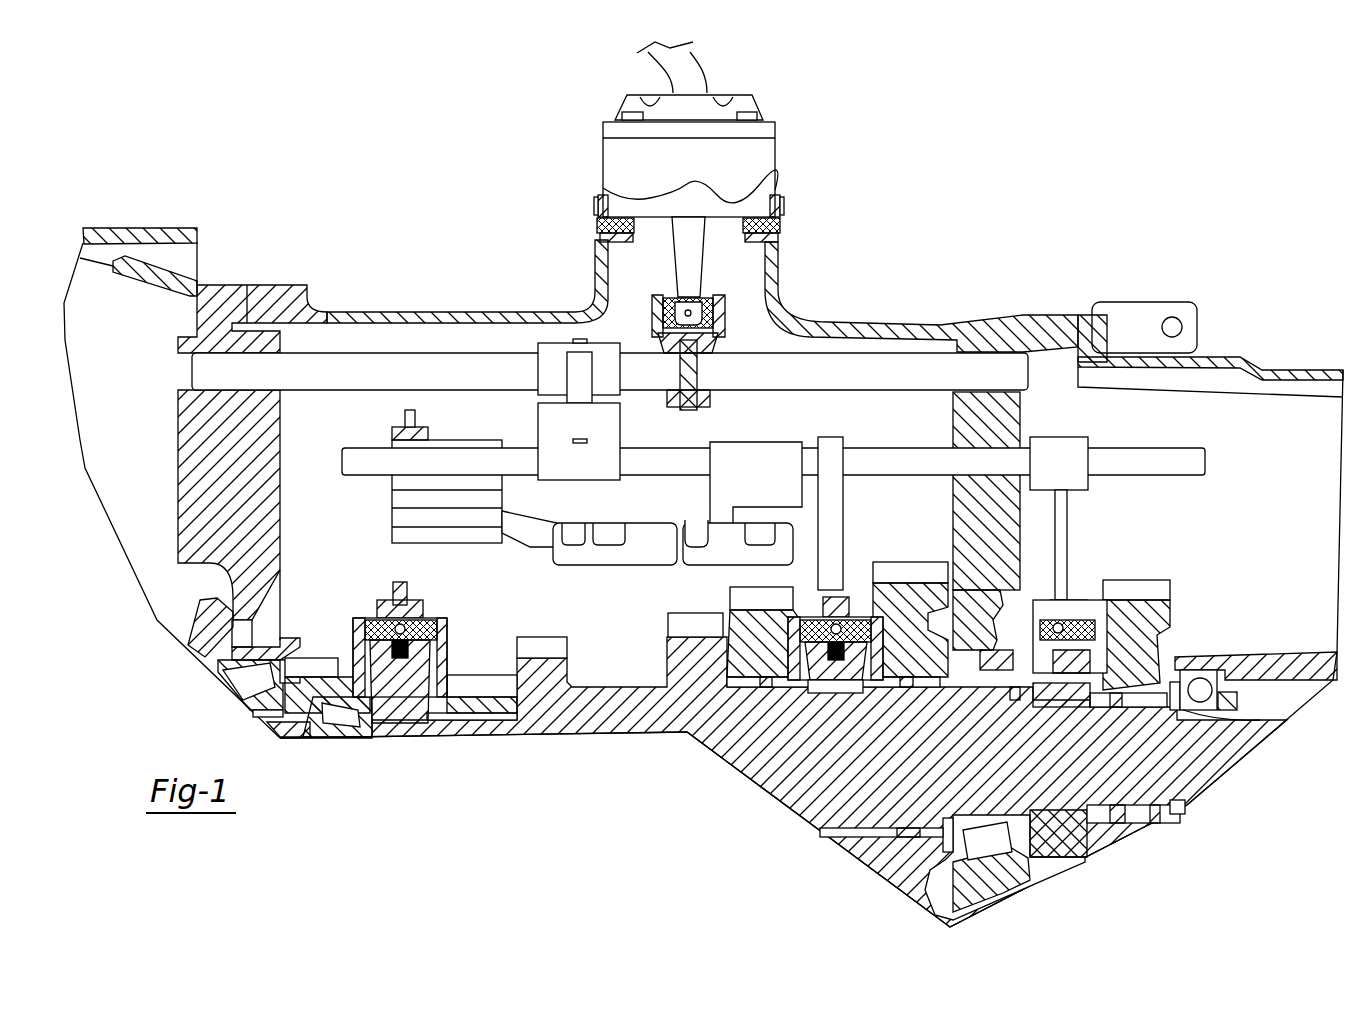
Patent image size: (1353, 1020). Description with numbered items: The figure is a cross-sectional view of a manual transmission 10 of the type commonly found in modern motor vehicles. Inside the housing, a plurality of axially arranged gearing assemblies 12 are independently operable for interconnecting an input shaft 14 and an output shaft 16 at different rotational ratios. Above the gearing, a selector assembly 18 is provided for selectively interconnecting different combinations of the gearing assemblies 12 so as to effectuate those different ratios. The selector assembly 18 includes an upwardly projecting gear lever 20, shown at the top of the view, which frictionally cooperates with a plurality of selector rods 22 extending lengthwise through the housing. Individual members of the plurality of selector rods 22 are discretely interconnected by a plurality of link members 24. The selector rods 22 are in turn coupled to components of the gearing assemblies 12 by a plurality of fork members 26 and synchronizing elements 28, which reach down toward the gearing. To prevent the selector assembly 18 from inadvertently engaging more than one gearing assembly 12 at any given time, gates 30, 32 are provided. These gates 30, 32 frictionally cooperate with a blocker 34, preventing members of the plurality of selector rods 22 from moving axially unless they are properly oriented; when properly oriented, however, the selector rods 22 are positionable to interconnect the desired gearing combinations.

The manual transmission 10 is at (906, 276).
The gearing assemblies 12 is at (478, 680).
The input shaft 14 is at (330, 662).
The output shaft 16 is at (563, 658).
The selector assembly 18 is at (372, 400).
The gear lever 20 is at (687, 230).
The selector rods 22 is at (876, 374).
The link members 24 is at (552, 425).
The fork members 26 is at (840, 530).
The synchronizing elements 28 is at (425, 615).
The gate 30 is at (625, 555).
The gate 32 is at (700, 523).
The blocker 34 is at (735, 468).